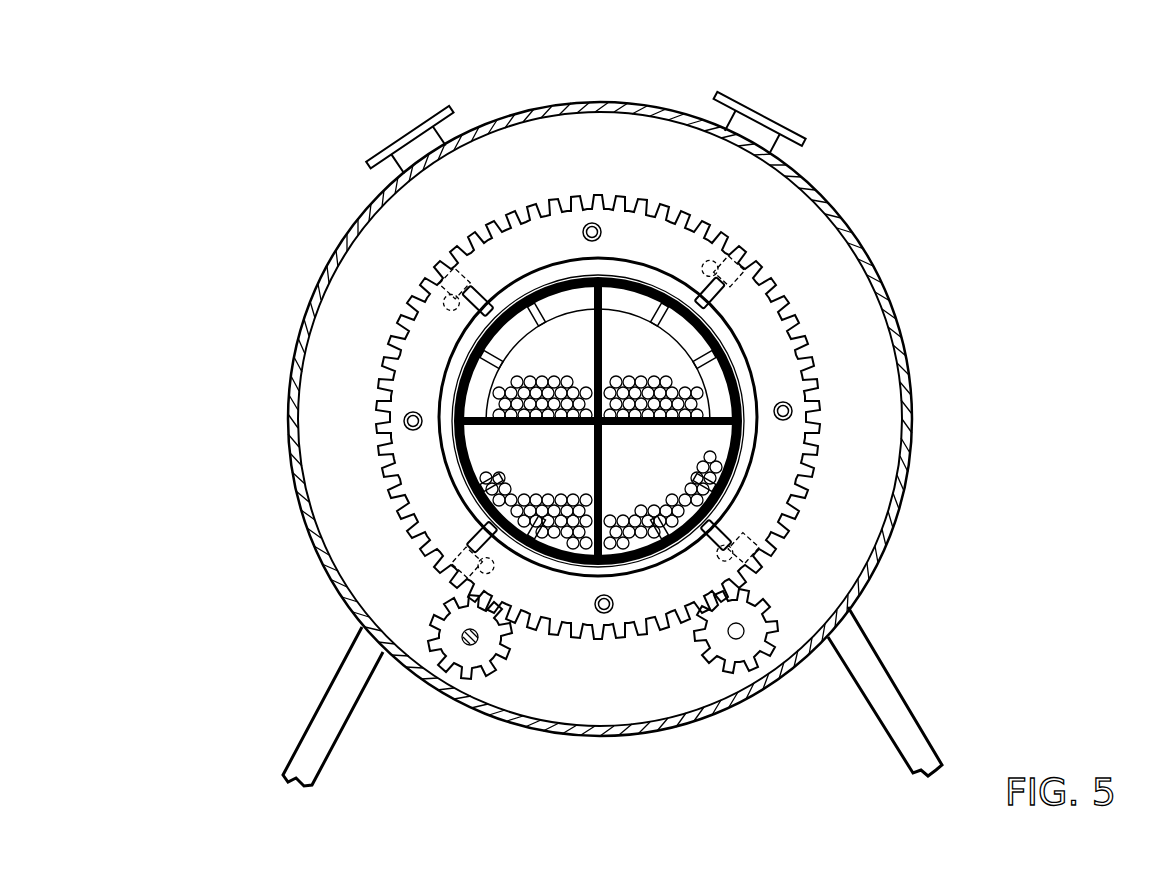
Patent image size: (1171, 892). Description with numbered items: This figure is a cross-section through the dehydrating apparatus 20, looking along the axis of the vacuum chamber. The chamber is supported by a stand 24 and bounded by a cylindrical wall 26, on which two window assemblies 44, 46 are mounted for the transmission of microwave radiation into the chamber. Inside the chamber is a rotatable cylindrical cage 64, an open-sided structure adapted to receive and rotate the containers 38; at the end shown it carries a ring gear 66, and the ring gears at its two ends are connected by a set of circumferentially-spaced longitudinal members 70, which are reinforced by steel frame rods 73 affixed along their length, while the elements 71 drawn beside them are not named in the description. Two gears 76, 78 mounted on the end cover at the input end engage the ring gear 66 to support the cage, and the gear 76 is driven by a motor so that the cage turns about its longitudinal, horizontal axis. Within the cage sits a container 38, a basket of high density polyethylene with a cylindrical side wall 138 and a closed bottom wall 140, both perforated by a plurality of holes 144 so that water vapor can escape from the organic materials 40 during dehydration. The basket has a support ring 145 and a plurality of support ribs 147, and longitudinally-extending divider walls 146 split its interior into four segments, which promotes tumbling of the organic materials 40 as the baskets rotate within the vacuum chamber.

The dehydrating apparatus 20 is at (935, 118).
The stand 24 is at (325, 690).
The cylindrical wall 26 is at (905, 345).
The container 38 is at (640, 281).
The organic materials 40 is at (666, 482).
The window assembly 44 is at (408, 147).
The window assembly 46 is at (767, 138).
The rotatable cylindrical cage 64 is at (836, 395).
The ring gear 66 is at (632, 194).
The longitudinal members 70 is at (455, 268).
The lugs 71 is at (493, 295).
The steel frame rods 73 is at (735, 262).
The gear 76 is at (495, 682).
The gear 78 is at (715, 682).
The cylindrical side wall 138 is at (800, 372).
The closed bottom wall 140 is at (470, 440).
The holes 144 is at (476, 335).
The support ring 145 is at (528, 330).
The divider walls 146 is at (595, 462).
The support ribs 147 is at (680, 320).